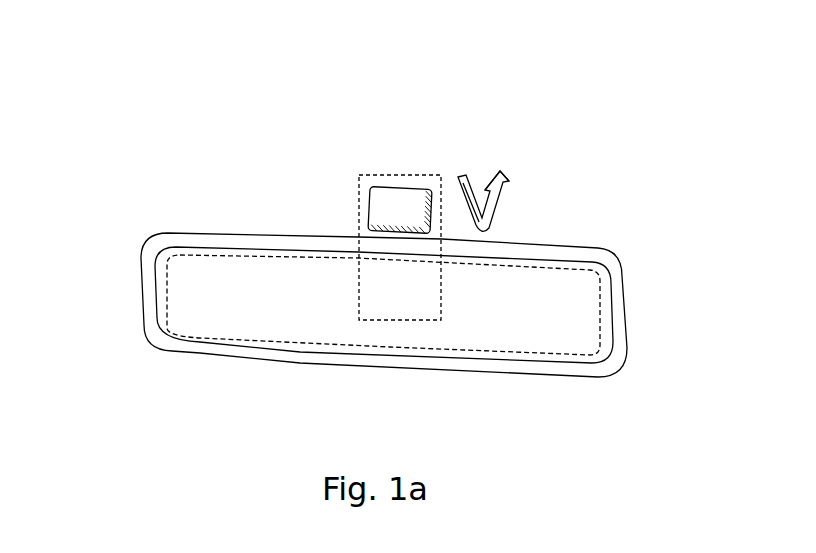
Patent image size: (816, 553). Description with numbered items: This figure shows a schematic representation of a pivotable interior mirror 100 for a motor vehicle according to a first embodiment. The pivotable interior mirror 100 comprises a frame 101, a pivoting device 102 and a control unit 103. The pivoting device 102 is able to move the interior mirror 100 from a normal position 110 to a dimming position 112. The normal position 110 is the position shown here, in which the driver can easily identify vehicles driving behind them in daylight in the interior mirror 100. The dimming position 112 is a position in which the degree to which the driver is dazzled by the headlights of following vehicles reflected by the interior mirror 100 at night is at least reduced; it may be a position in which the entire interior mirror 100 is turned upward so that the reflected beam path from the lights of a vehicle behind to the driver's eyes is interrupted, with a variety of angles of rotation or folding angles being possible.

The pivotable interior mirror 100 is at (336, 66).
The frame 101 is at (141, 289).
The pivoting device 102 is at (385, 170).
The control unit 103 is at (614, 352).
The normal position 110 is at (464, 170).
The dimming position 112 is at (518, 162).